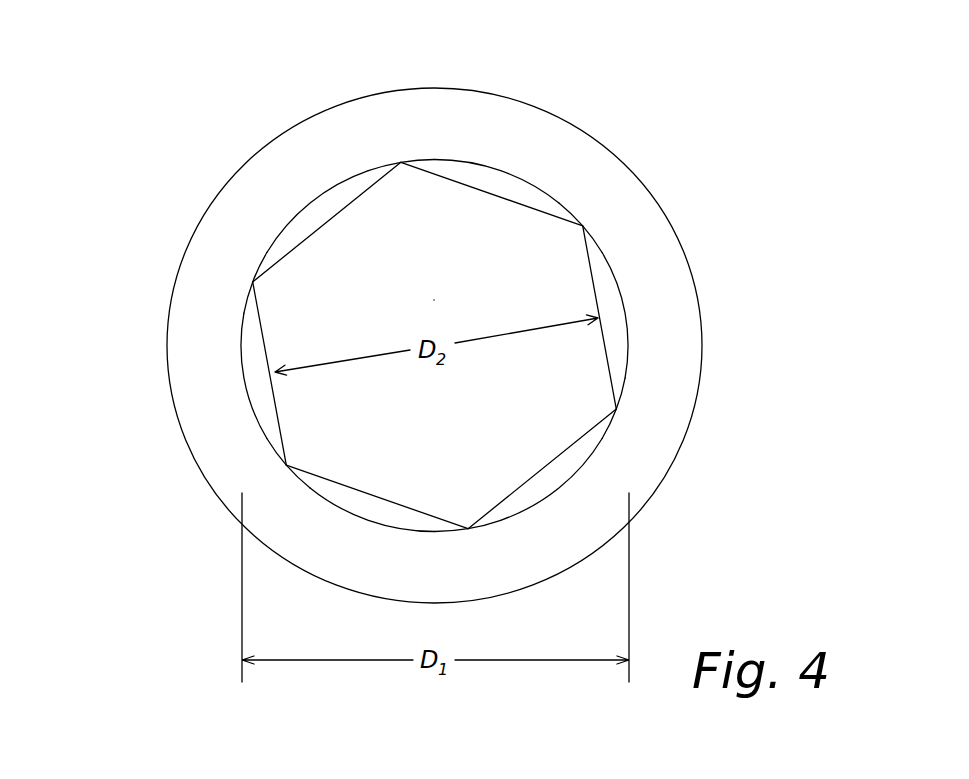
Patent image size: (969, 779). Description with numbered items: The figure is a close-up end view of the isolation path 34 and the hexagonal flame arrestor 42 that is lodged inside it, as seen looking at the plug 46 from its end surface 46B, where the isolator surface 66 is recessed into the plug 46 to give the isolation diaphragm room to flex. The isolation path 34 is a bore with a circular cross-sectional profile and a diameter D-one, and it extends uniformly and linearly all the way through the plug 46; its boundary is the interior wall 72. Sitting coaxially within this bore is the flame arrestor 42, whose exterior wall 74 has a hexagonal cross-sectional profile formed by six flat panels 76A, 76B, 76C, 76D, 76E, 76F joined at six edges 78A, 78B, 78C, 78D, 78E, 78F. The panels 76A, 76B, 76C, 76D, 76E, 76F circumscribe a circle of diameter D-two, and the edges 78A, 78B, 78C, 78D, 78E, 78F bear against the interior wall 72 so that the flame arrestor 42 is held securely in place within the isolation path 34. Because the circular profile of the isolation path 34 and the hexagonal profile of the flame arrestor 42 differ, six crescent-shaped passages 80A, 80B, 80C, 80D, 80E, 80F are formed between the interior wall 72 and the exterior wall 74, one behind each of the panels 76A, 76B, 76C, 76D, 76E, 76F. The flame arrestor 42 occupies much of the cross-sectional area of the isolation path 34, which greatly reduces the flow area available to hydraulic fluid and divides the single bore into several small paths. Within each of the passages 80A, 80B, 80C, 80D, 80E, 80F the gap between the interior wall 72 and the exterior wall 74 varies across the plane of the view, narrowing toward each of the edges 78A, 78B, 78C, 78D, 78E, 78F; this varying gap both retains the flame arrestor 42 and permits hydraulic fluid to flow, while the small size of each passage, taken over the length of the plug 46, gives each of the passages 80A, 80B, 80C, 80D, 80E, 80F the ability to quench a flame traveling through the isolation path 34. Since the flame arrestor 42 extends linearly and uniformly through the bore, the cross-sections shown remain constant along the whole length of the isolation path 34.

The plug 46 is at (148, 100).
The end surface 46B is at (232, 178).
The isolator surface 66 is at (633, 213).
The interior wall 72 is at (352, 177).
The isolation path 34 is at (447, 150).
The exterior wall 74 is at (617, 267).
The flame arrestor 42 is at (514, 257).
The panel 76A is at (543, 212).
The panel 76B is at (610, 369).
The panel 76C is at (510, 495).
The panel 76D is at (327, 480).
The panel 76E is at (264, 337).
The panel 76F is at (296, 234).
The edge 78A is at (583, 226).
The edge 78B is at (616, 409).
The edge 78C is at (468, 529).
The edge 78D is at (286, 465).
The edge 78E is at (253, 282).
The edge 78F is at (401, 162).
The passage 80A is at (483, 177).
The passage 80B is at (612, 320).
The passage 80C is at (560, 473).
The passage 80D is at (380, 510).
The passage 80E is at (258, 385).
The passage 80F is at (318, 210).